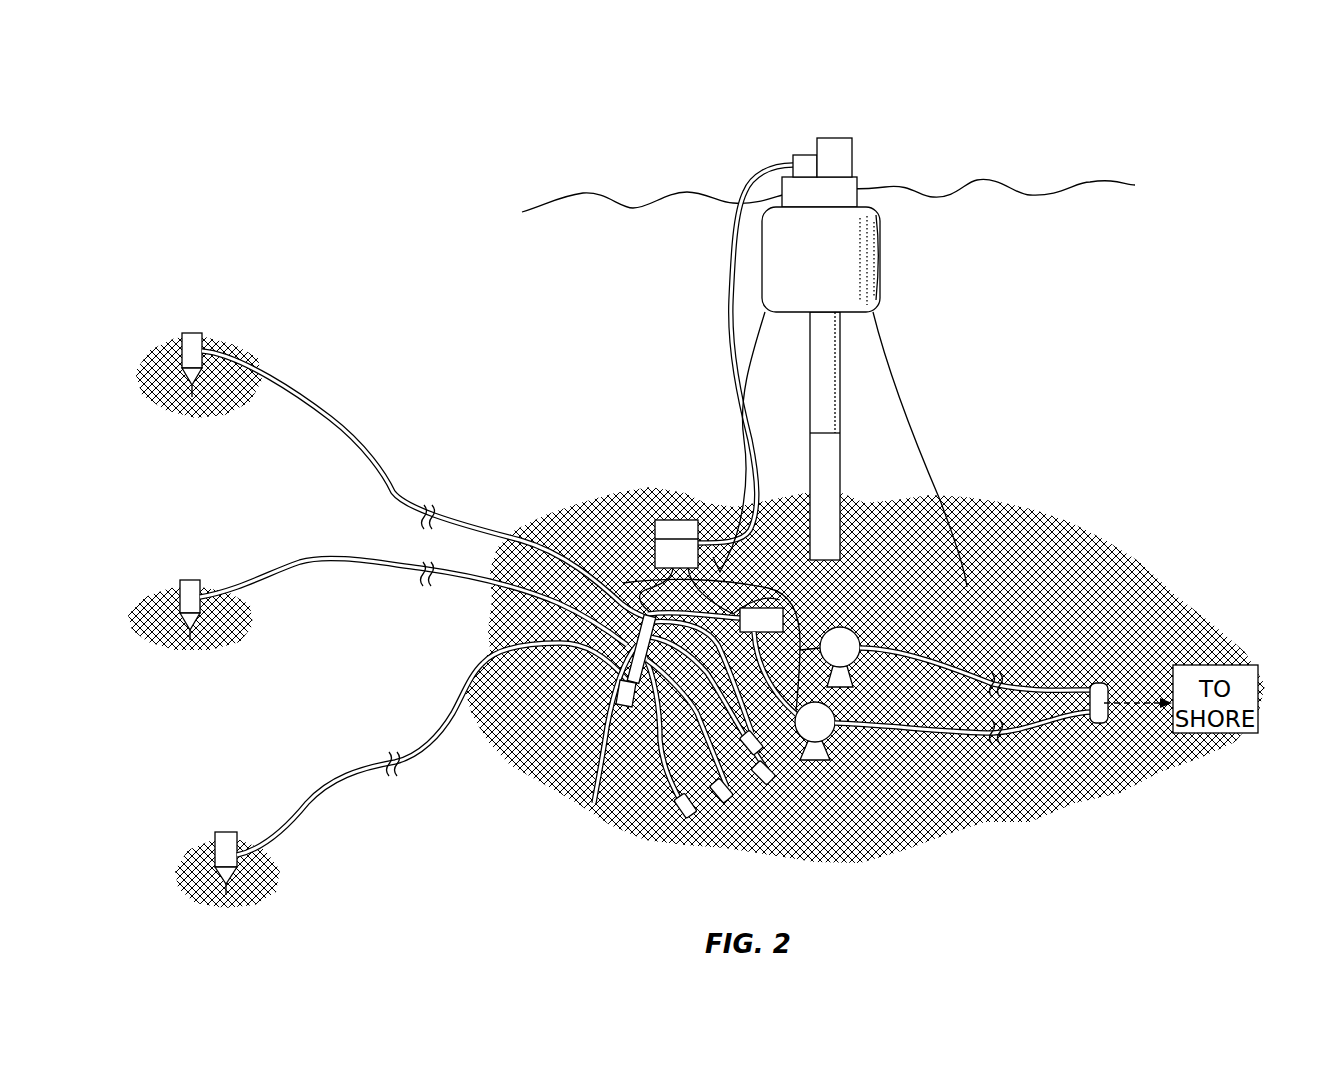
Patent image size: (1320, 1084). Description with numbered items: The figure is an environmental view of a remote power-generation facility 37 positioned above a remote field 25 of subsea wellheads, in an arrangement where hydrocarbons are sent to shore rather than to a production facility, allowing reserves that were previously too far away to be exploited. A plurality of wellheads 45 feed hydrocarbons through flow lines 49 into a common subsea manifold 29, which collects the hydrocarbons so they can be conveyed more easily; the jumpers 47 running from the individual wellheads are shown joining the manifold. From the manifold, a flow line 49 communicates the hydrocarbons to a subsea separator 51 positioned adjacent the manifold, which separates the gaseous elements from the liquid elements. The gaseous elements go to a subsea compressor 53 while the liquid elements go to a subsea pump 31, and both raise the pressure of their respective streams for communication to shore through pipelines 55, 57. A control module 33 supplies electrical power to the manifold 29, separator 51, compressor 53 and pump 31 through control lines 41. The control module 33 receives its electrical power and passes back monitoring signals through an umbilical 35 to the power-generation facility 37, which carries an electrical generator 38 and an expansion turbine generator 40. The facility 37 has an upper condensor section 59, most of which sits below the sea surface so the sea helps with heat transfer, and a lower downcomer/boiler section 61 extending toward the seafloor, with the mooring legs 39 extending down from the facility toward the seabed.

The remote field 25 is at (1045, 478).
The subsea manifold 29 is at (617, 697).
The subsea pump 31 is at (837, 740).
The control module 33 is at (676, 527).
The umbilical 35 is at (725, 302).
The remote power-generation facility 37 is at (882, 190).
The electrical generator 38 is at (807, 155).
The mooring legs 39 is at (882, 337).
The expansion turbine generator 40 is at (835, 138).
The control lines 41 is at (642, 612).
The wellheads 45 is at (190, 580).
The well flowlines 47 is at (470, 680).
The flow lines 49 is at (743, 635).
The subsea separator 51 is at (780, 600).
The subsea compressor 53 is at (853, 628).
The pipeline 55 is at (1043, 717).
The pipeline 57 is at (1037, 690).
The condensor section 59 is at (882, 237).
The downcomer/boiler section 61 is at (810, 377).